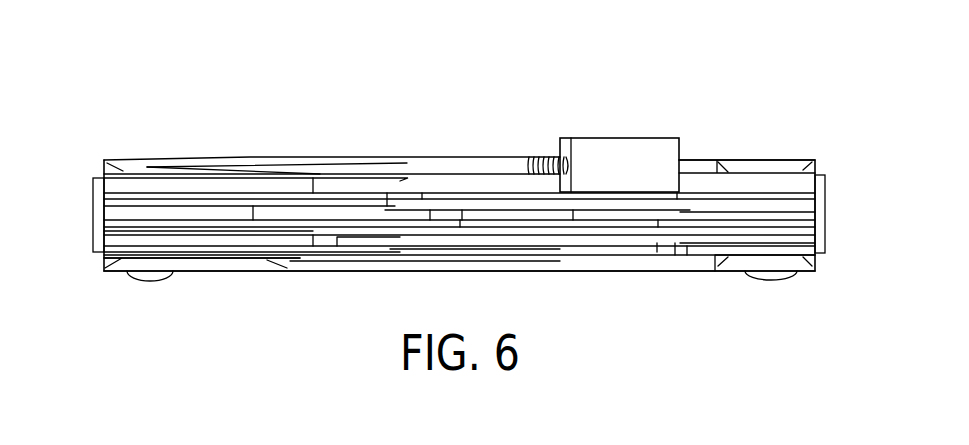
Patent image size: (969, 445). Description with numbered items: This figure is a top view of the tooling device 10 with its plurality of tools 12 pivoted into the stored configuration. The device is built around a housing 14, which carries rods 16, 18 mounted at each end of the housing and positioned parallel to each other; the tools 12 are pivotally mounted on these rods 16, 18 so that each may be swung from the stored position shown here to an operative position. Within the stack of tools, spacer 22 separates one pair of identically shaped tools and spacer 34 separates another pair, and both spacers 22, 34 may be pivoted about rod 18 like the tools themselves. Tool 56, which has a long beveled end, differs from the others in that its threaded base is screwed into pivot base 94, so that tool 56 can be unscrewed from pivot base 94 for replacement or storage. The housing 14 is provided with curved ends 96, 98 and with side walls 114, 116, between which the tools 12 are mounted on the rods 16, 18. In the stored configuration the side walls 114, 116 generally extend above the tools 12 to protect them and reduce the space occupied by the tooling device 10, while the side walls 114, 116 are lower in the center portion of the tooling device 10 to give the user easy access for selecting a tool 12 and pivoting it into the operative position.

The tooling device 10 is at (195, 98).
The tools 12 is at (705, 105).
The housing 14 is at (803, 273).
The rod 16 is at (767, 277).
The rod 18 is at (150, 280).
The spacer 22 is at (248, 238).
The spacer 34 is at (148, 218).
The tool 56 is at (452, 163).
The pivot base 94 is at (608, 155).
The curved end 96 is at (95, 213).
The curved end 98 is at (820, 215).
The side wall 114 is at (562, 263).
The side wall 116 is at (783, 163).